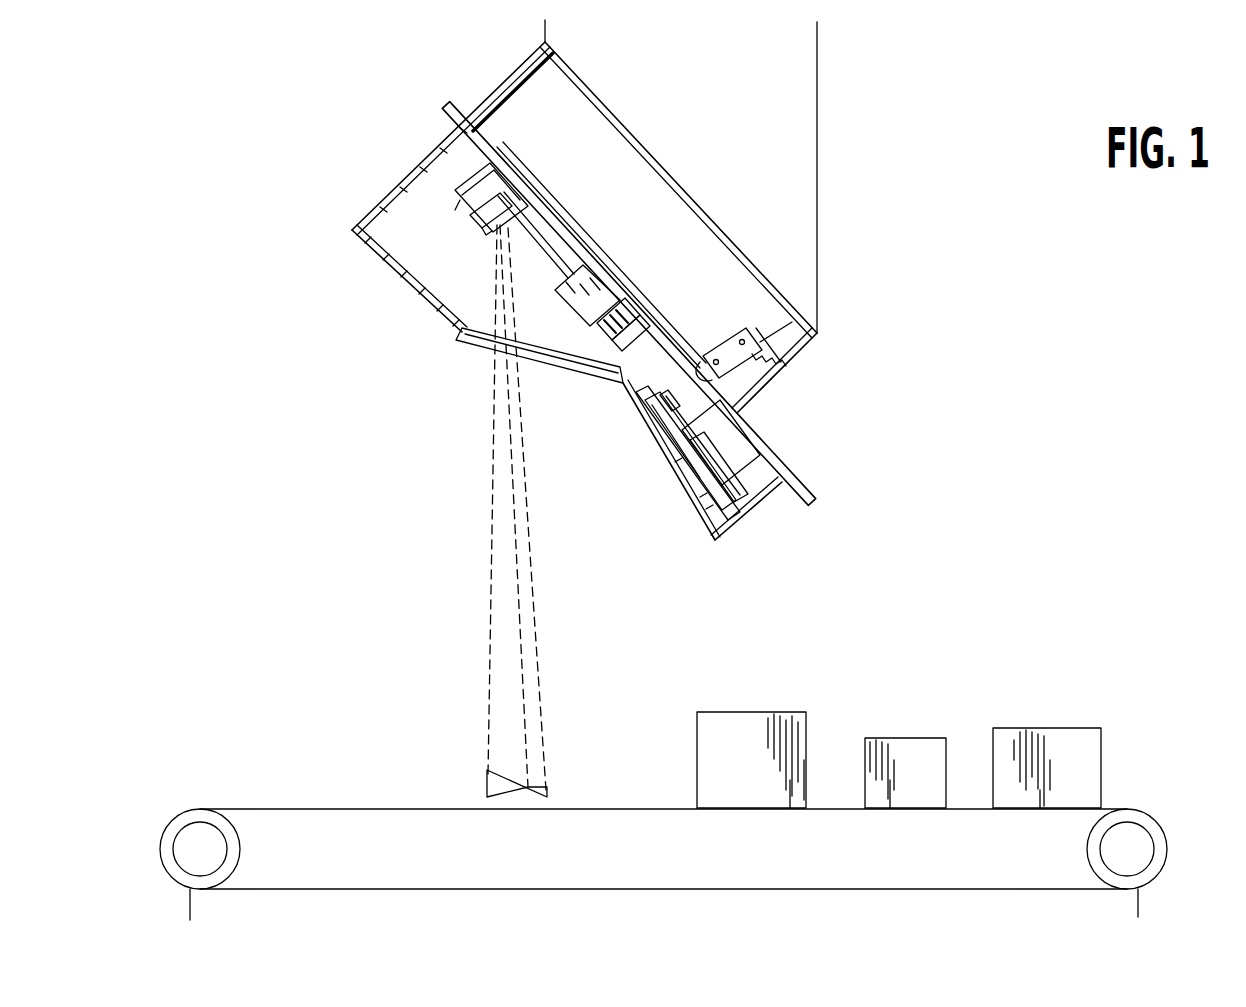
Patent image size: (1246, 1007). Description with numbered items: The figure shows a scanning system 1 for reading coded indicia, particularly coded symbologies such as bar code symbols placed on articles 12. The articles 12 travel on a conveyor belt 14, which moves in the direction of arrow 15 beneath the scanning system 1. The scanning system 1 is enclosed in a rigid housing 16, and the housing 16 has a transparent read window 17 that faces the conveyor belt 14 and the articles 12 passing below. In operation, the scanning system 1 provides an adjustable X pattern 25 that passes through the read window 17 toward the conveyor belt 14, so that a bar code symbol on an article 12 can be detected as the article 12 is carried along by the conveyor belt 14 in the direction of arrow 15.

The scanning system 1 is at (606, 405).
The articles 12 is at (807, 710).
The conveyor belt 14 is at (306, 808).
The arrow 15 is at (761, 573).
The rigid housing 16 is at (397, 182).
The transparent read window 17 is at (578, 378).
The adjustable X pattern 25 is at (480, 778).